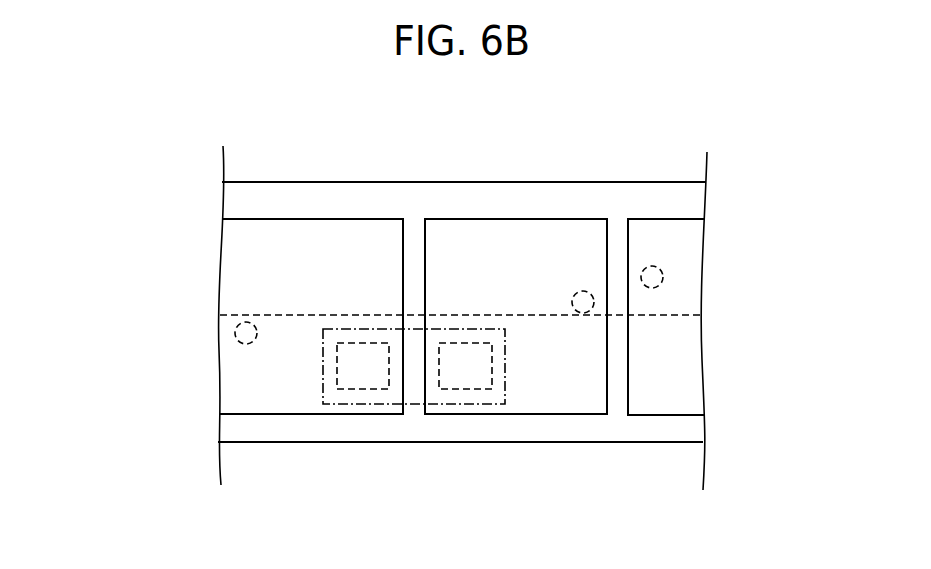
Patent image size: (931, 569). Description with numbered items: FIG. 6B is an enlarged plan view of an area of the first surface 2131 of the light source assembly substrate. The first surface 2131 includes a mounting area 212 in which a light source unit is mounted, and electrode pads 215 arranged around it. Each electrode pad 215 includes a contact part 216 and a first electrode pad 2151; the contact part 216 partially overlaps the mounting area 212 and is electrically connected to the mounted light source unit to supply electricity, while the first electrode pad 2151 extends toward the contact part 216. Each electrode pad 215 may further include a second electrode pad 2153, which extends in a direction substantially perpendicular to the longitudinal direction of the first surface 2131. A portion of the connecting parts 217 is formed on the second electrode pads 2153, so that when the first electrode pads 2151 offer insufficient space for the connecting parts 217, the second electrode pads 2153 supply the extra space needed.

The first surface 2131 is at (461, 192).
The electrode pad 215 is at (467, 376).
The second electrode pad 2153 is at (238, 292).
The first electrode pad 2151 is at (466, 408).
The mounting area 212 is at (382, 406).
The contact part 216 is at (452, 392).
The connecting part 217 is at (244, 344).